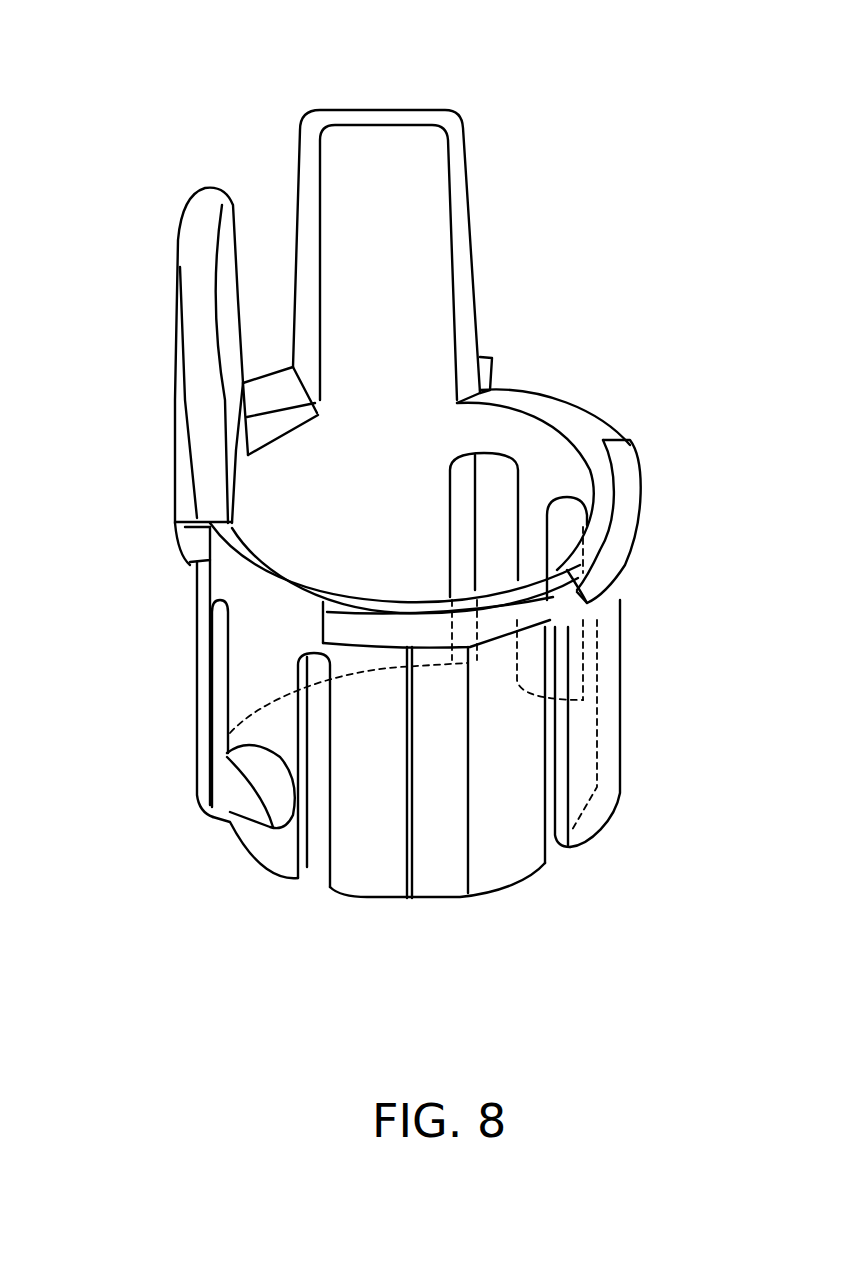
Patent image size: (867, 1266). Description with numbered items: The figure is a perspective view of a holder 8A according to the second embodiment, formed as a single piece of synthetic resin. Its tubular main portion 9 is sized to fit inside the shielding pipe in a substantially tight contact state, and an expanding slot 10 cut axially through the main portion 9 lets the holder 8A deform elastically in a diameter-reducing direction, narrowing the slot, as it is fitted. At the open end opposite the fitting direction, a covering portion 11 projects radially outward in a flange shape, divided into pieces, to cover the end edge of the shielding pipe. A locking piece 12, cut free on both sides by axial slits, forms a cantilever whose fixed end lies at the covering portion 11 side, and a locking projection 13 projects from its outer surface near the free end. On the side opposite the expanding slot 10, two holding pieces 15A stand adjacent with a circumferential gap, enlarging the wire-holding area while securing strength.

The holder 8A is at (583, 277).
The main portion 9 is at (363, 835).
The expanding slot 10 is at (547, 777).
The covering portion 11 is at (530, 620).
The locking piece 12 is at (243, 657).
The locking projection 13 is at (230, 780).
The holding piece 15A is at (393, 137).